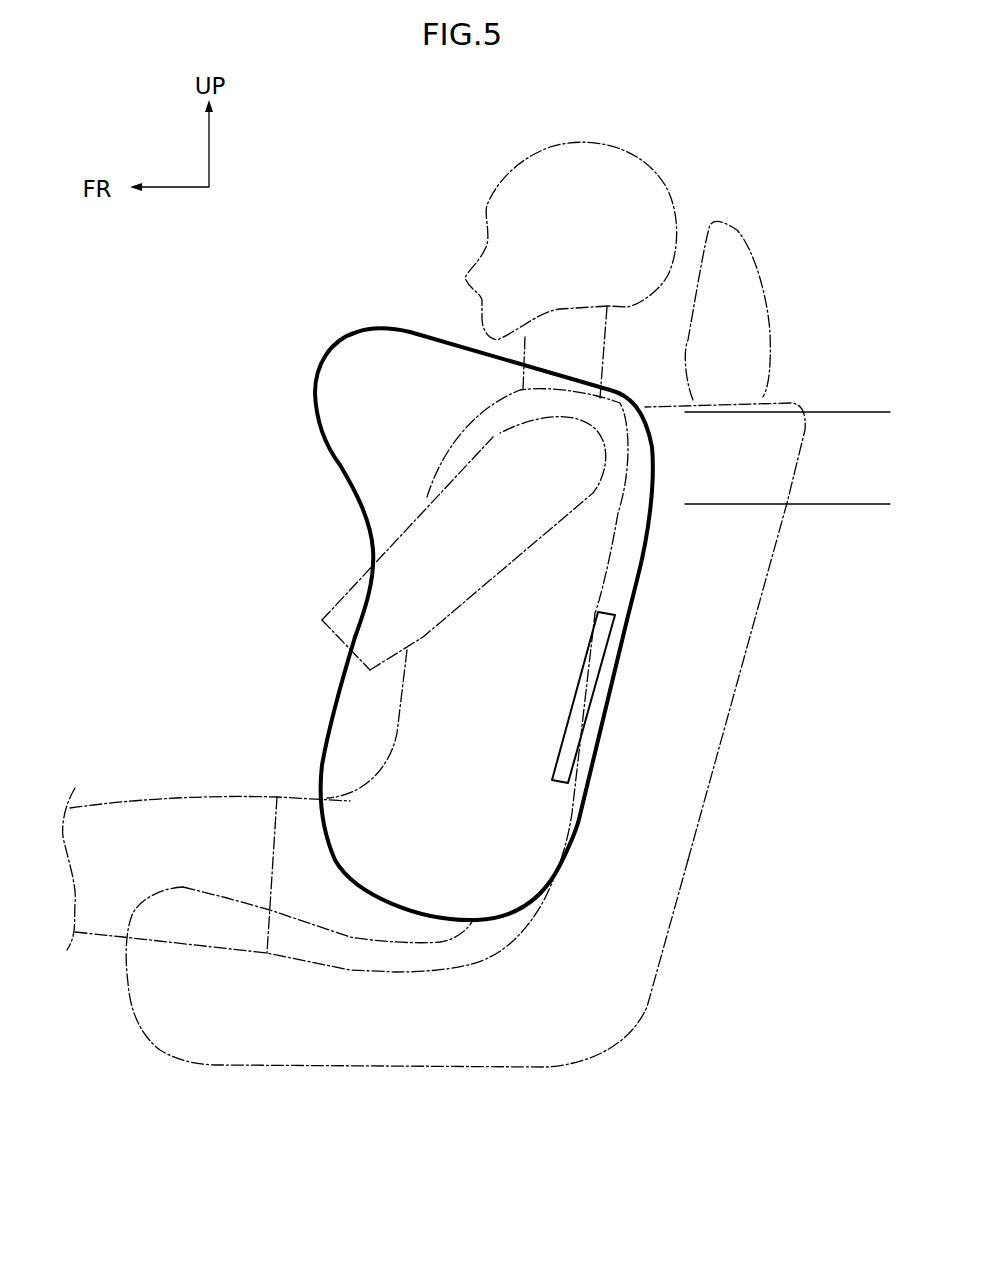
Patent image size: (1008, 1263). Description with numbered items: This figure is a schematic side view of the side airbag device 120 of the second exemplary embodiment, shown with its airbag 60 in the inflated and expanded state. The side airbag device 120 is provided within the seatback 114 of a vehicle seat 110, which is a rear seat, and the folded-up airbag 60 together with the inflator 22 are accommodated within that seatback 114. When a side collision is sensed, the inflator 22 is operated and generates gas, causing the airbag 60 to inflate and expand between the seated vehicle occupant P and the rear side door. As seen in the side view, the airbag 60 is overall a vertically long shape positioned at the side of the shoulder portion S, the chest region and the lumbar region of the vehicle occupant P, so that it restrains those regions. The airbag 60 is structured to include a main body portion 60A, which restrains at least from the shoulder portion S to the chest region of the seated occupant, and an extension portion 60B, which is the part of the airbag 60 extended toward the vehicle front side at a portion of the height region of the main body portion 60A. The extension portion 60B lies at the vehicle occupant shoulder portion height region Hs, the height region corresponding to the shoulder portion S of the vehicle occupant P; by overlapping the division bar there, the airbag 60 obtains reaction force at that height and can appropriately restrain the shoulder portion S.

The vehicle seat 110 is at (132, 1002).
The seatback 114 is at (752, 635).
The side airbag device 120 is at (447, 644).
The airbag 60 is at (442, 599).
The main body portion 60A is at (352, 758).
The extension portion 60B is at (353, 363).
The inflator 22 is at (582, 702).
The vehicle occupant P is at (370, 546).
The shoulder portion S is at (575, 440).
The vehicle occupant shoulder portion height region Hs is at (876, 413).